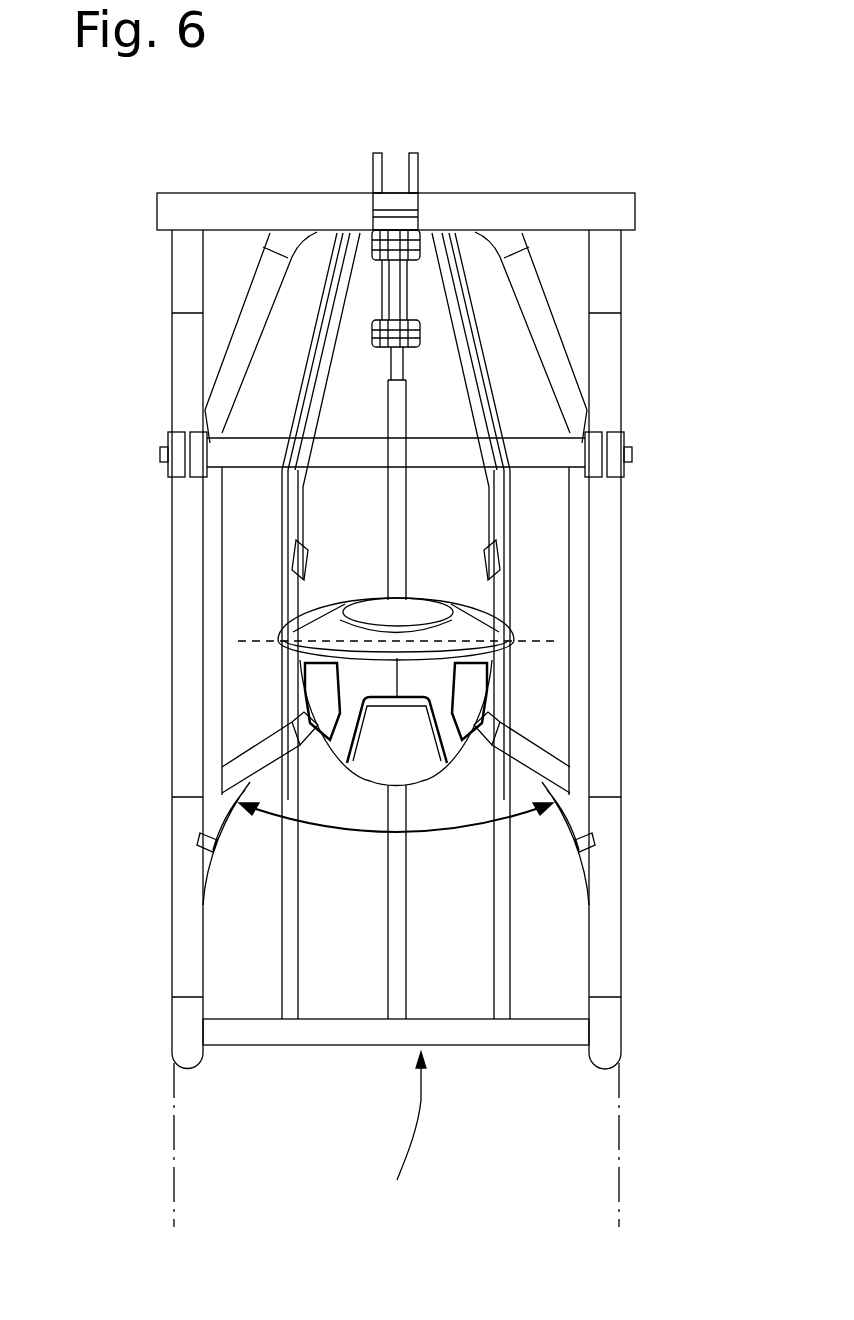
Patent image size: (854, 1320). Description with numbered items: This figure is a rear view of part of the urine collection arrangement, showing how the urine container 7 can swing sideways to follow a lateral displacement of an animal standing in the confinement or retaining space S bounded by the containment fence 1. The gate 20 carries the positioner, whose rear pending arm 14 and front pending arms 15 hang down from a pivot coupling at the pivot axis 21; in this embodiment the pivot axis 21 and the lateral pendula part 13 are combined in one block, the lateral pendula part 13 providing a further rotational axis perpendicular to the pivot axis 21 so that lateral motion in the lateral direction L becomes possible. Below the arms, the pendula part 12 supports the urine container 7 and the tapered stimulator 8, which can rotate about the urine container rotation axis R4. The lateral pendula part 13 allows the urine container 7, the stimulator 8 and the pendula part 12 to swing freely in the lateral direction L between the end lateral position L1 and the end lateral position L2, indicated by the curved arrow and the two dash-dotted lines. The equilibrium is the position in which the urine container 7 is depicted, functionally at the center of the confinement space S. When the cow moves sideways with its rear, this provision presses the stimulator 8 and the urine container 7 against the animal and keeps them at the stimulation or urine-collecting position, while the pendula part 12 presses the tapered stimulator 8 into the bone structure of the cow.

The containment fence 1 is at (603, 682).
The urine container 7 is at (412, 752).
The stimulator 8 is at (415, 612).
The pendula part 12 is at (300, 515).
The lateral pendula part 13 is at (418, 337).
The rear pending arm 14 is at (388, 543).
The front pending arm 15 is at (472, 386).
The gate 20 is at (553, 342).
The pivot axis 21 is at (370, 340).
The urine container rotation axis R4 is at (395, 626).
The lateral direction L is at (373, 827).
The confinement or retaining space S is at (404, 1124).
The end lateral position L1 is at (190, 1150).
The end lateral position L2 is at (635, 1150).